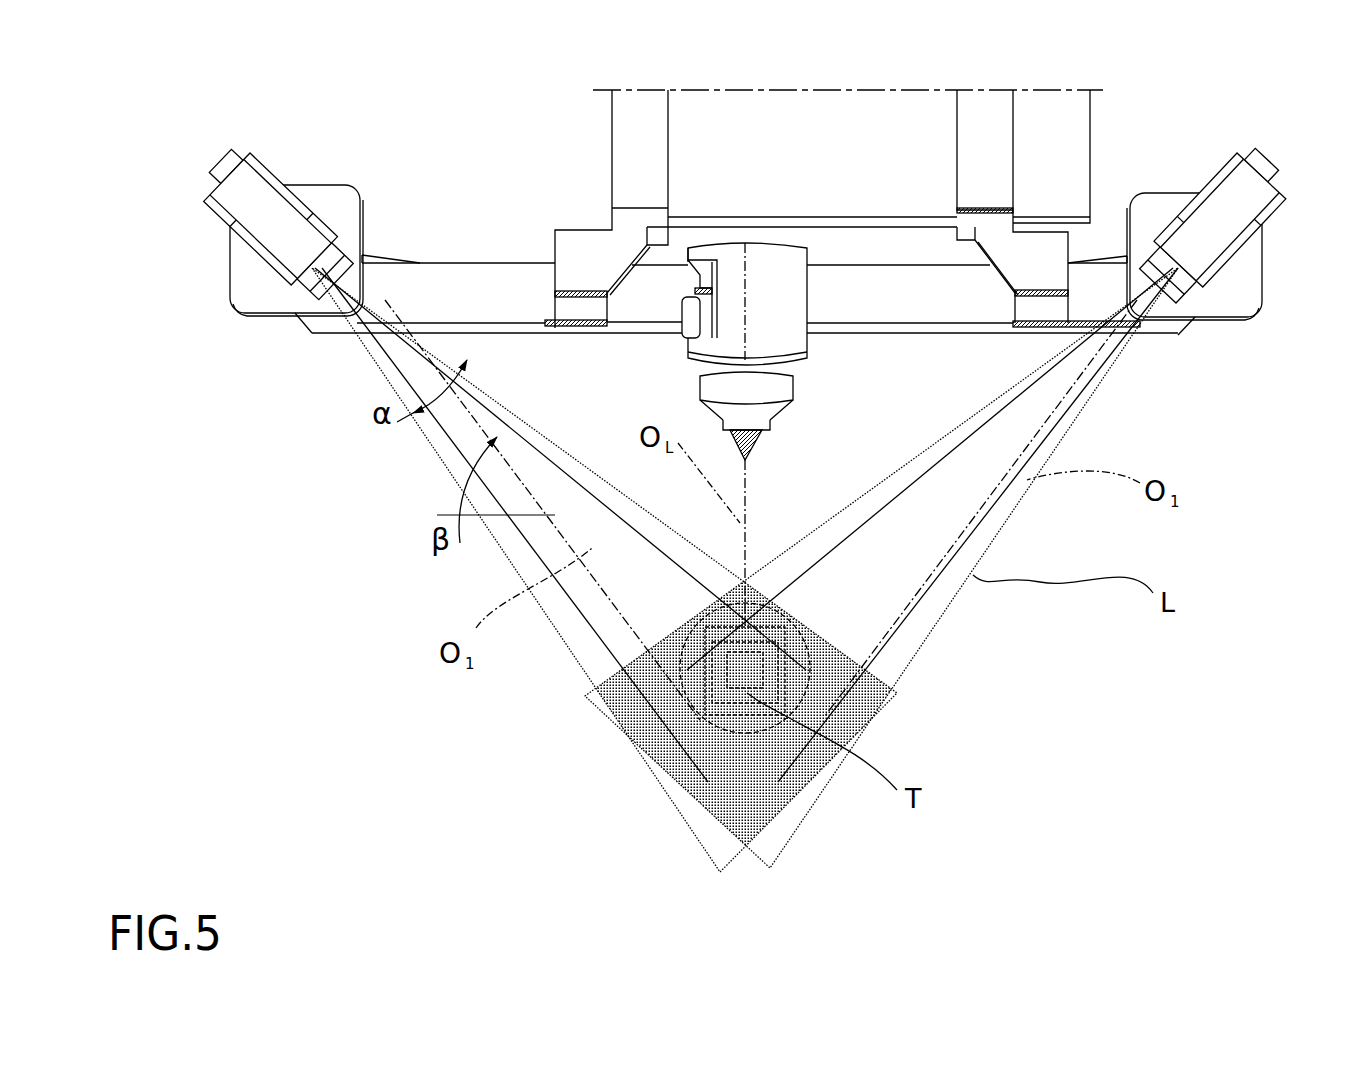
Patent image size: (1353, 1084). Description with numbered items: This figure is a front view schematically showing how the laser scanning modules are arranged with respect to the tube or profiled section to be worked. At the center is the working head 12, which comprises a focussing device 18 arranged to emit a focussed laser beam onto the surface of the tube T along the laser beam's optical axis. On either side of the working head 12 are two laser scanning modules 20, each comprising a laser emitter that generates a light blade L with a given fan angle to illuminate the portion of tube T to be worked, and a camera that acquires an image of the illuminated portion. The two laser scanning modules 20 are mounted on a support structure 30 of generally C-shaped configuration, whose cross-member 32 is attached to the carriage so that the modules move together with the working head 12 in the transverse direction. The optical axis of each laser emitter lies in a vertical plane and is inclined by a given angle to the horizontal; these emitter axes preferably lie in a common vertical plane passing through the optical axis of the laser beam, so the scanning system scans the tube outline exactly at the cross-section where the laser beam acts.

The working head 12 is at (812, 352).
The focussing device 18 is at (749, 460).
The laser scanning module 20 is at (300, 176).
The support structure 30 is at (435, 258).
The cross-member 32 is at (502, 266).